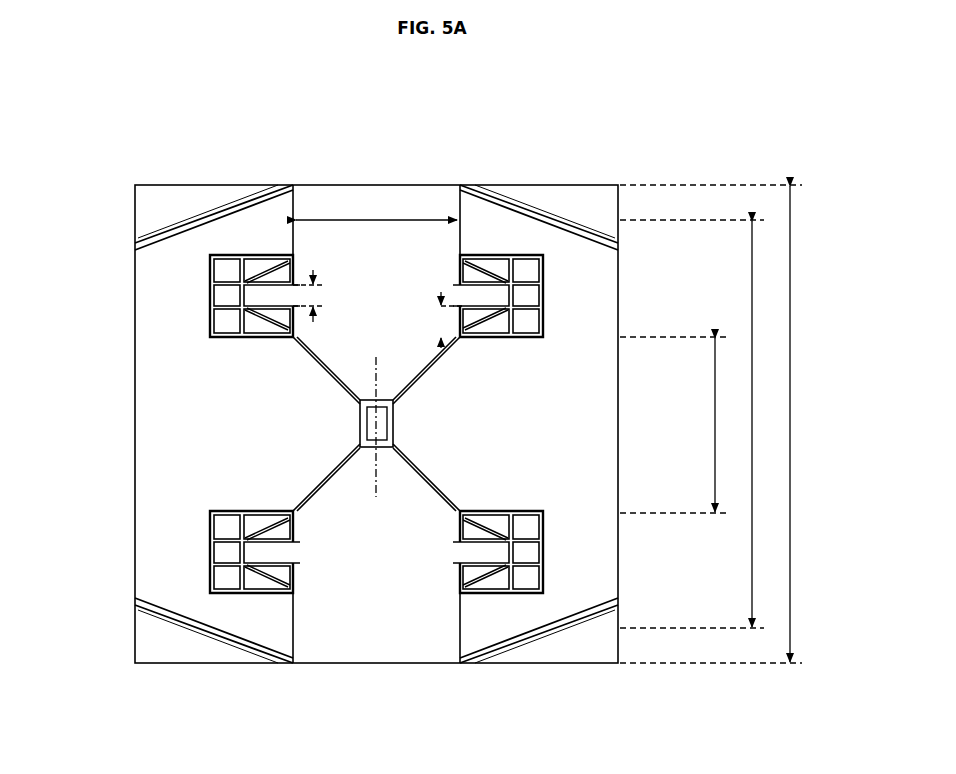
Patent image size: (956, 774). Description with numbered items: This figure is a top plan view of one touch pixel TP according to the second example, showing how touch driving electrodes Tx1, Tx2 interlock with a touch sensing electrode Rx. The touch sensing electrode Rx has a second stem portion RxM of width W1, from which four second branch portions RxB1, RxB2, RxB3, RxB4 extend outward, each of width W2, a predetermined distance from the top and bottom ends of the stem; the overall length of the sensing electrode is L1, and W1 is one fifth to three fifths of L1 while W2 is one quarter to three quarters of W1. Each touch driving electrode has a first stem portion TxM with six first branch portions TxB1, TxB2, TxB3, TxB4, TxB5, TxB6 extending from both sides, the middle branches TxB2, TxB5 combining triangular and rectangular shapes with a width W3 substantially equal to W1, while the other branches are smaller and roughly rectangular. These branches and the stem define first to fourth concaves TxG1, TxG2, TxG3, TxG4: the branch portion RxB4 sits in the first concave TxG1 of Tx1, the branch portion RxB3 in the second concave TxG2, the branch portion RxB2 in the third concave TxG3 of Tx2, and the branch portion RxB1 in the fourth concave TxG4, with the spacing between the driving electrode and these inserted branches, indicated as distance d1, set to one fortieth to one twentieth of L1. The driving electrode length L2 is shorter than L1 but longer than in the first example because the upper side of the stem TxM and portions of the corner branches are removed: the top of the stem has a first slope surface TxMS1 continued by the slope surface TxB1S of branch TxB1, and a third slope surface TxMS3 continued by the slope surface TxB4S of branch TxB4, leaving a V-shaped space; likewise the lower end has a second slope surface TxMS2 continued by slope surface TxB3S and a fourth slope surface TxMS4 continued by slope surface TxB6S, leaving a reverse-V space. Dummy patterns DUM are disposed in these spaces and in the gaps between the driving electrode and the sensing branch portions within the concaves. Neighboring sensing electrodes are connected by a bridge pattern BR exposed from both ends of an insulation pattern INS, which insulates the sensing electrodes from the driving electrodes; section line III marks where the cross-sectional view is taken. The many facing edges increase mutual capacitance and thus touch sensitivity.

The touch pixel TP is at (180, 89).
The dummy pattern DUM is at (197, 192).
The first slope surface TxMS1 is at (170, 222).
The second slope surface TxMS2 is at (170, 625).
The third slope surface TxMS3 is at (582, 222).
The 1-4 slope surface TxMS4 is at (582, 625).
The slope surface of the 1-1 branch portion TxB1S is at (240, 208).
The slope surface of the 1-3 branch portion TxB3S is at (240, 640).
The slope surface of the 1-4 branch portion TxB4S is at (512, 208).
The slope surface of the 1-6 branch portion TxB6S is at (512, 640).
The 1-1 branch portion TxB1 is at (263, 230).
The 1-2 branch portion TxB2 is at (262, 358).
The 1-3 branch portion TxB3 is at (263, 617).
The 1-4 branch portion TxB4 is at (490, 230).
The 1-5 branch portion TxB5 is at (490, 358).
The 1-6 branch portion TxB6 is at (490, 617).
The 2-1 branch portion RxB1 is at (487, 552).
The 2-2 branch portion RxB2 is at (487, 296).
The 2-3 branch portion RxB3 is at (265, 552).
The 2-4 branch portion RxB4 is at (267, 296).
The first concave TxG1 is at (262, 265).
The second concave TxG2 is at (262, 585).
The third concave TxG3 is at (490, 265).
The fourth concave TxG4 is at (490, 585).
The second stem portion RxM is at (337, 195).
The touch sensing electrode Rx is at (378, 182).
The touch driving electrode Tx1 is at (124, 412).
The touch driving electrode Tx2 is at (630, 412).
The first stem portion TxM is at (157, 460).
The bridge pattern BR is at (383, 400).
The insulation pattern INS is at (381, 447).
The width of the second stem portion W1 is at (376, 209).
The width of the 2-1 to 2-4 branch portions W2 is at (322, 296).
The width of the 1-2 and 1-5 branch portions W3 is at (684, 425).
The first distance d1 is at (441, 320).
The length of the touch sensing electrode L1 is at (717, 424).
The length of the touch driving electrode L2 is at (698, 424).
The section line III-III' III is at (374, 357).